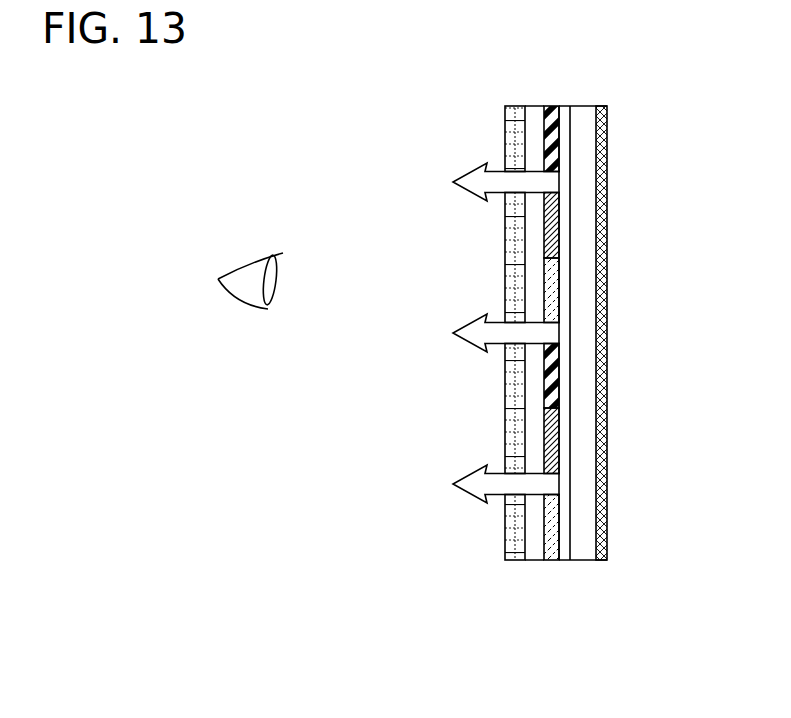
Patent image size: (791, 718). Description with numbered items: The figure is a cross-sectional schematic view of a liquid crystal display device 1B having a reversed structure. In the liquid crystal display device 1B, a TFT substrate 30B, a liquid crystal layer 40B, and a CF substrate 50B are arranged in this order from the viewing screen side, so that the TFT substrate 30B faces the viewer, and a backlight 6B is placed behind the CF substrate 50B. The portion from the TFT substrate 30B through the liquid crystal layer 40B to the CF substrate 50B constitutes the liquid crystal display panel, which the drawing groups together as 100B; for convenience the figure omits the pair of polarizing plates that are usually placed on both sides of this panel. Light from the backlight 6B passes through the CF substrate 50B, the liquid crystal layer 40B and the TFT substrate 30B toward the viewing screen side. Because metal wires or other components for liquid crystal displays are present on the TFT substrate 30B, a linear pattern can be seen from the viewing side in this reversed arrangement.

The liquid crystal display device 1B is at (638, 103).
The backlight 6B is at (584, 502).
The TFT substrate 30B is at (508, 556).
The liquid crystal layer 40B is at (530, 550).
The CF substrate 50B is at (553, 553).
The optical laminate 100B is at (630, 634).